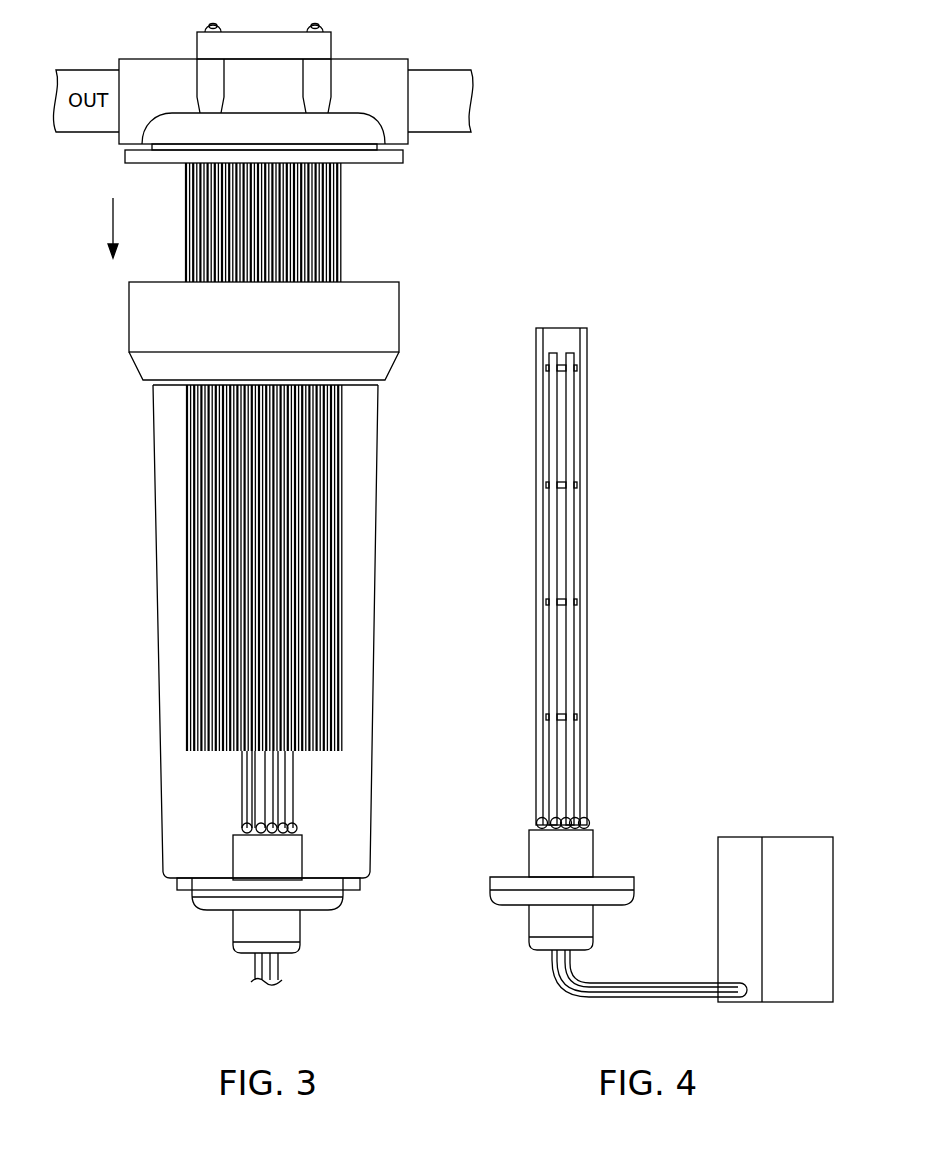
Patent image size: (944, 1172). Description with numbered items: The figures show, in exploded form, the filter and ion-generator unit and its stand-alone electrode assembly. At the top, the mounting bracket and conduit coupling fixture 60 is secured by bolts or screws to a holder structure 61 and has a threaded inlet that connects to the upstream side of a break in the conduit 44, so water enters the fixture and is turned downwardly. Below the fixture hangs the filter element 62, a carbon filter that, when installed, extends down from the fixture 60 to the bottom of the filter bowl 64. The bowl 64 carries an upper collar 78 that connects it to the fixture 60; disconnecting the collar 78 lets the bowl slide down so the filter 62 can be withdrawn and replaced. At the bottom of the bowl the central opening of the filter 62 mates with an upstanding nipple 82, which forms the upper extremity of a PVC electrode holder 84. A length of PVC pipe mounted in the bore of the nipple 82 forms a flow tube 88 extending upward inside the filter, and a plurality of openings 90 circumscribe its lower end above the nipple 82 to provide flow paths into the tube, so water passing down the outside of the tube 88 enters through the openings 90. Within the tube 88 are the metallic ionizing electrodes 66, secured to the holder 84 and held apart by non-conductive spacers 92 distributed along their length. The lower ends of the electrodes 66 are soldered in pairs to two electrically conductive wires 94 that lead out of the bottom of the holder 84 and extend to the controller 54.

In FIG. 3, the conduit 44 is at (437, 70).
In FIG. 4, the controller 54 is at (728, 933).
In FIG. 3, the mounting bracket and conduit coupling fixture 60 is at (357, 59).
In FIG. 3, the holder structure 61 is at (197, 43).
In FIG. 3, the filter element 62 is at (329, 249).
In FIG. 3, the filter bowl 64 is at (375, 522).
In FIG. 3, the ionizing electrodes 66 is at (252, 790).
In FIG. 4, the ionizing electrodes 66 is at (572, 440).
In FIG. 3, the upper collar 78 is at (129, 320).
In FIG. 3, the nipple 82 is at (290, 863).
In FIG. 3, the electrode holder 84 is at (233, 922).
In FIG. 4, the electrode holder 84 is at (593, 877).
In FIG. 3, the flow tube 88 is at (295, 785).
In FIG. 4, the flow tube 88 is at (587, 505).
In FIG. 3, the openings 90 is at (293, 828).
In FIG. 4, the openings 90 is at (585, 825).
In FIG. 4, the non-conductive spacers 92 is at (580, 717).
In FIG. 3, the electrical leads 94 is at (278, 962).
In FIG. 4, the electrical leads 94 is at (552, 970).